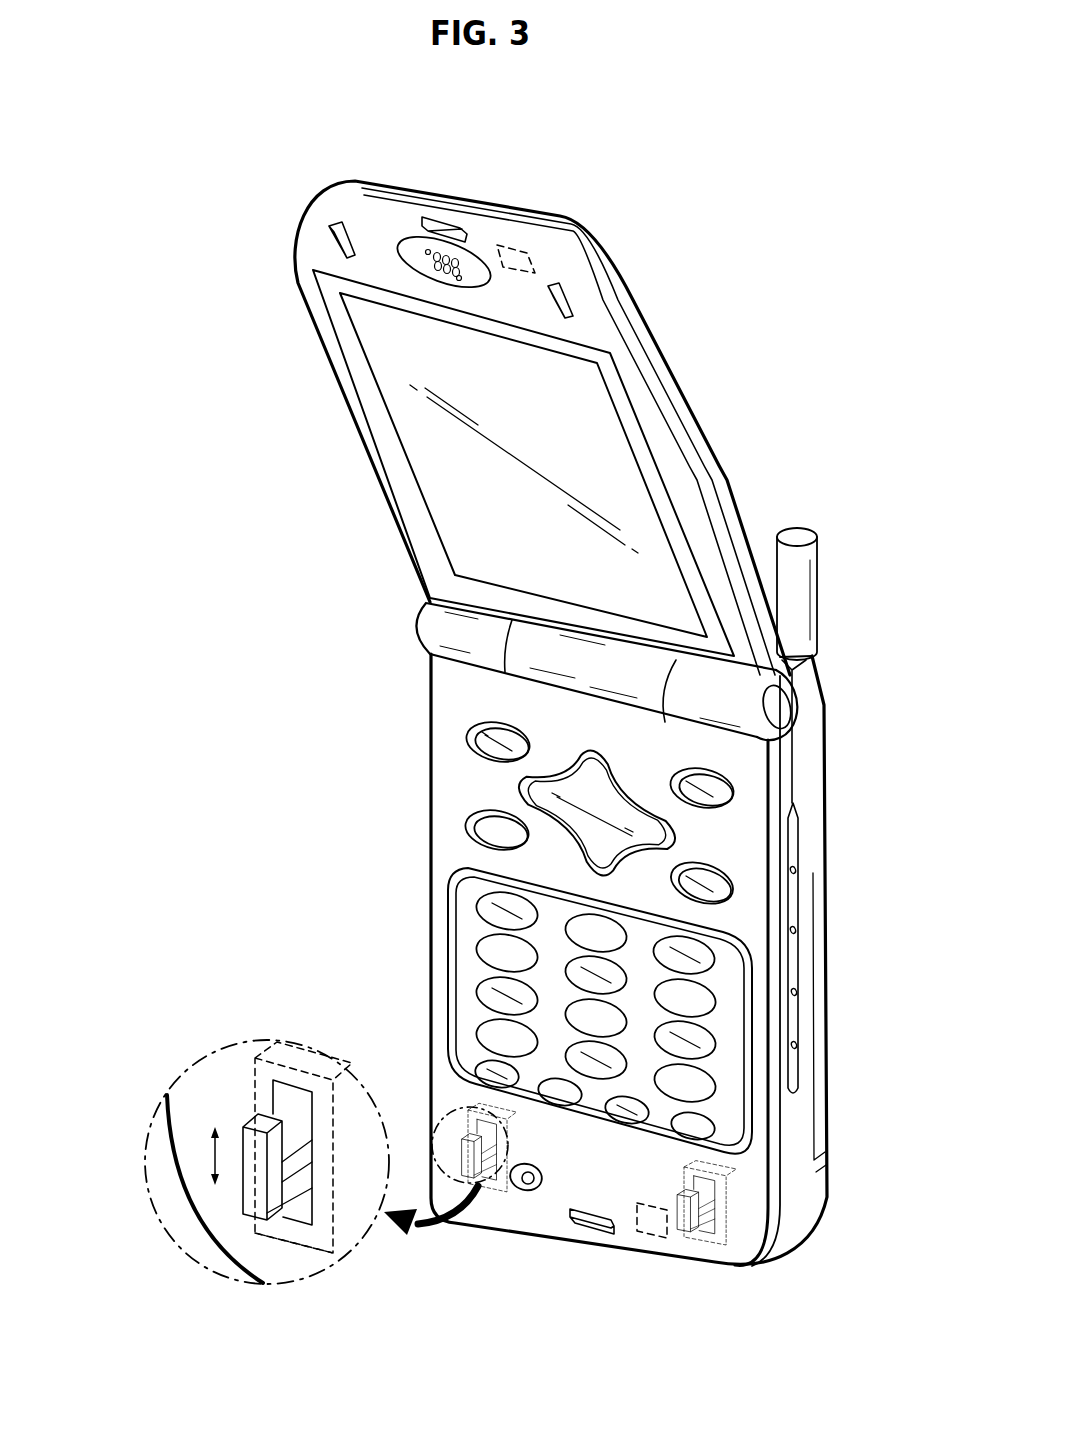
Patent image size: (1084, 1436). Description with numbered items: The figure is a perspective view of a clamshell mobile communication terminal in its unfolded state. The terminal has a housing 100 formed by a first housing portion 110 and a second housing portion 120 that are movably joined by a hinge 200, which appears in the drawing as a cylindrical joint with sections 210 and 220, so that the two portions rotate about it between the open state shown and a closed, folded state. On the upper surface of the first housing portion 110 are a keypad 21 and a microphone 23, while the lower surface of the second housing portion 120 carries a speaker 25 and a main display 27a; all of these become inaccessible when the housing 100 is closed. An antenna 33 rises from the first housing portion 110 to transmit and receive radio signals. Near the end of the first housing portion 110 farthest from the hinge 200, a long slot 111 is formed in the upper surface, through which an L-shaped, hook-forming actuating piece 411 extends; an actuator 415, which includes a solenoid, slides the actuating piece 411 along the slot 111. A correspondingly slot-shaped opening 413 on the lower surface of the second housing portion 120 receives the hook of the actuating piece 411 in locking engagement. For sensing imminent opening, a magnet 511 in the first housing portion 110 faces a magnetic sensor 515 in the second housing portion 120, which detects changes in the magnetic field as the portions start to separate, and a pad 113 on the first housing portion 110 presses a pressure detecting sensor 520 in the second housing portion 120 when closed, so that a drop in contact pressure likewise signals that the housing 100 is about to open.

The housing 100 is at (292, 590).
The first housing portion 110 is at (418, 704).
The second housing portion 120 is at (404, 564).
The hinge 200 is at (853, 427).
The hinge housing 210 is at (590, 663).
The hinge module 220 is at (718, 697).
The keypad 21 is at (466, 929).
The microphone 23 is at (530, 1183).
The speaker 25 is at (440, 262).
The main display 27a is at (430, 455).
The antenna 33 is at (793, 600).
The long slot 111 is at (285, 1080).
The pad 113 is at (593, 1218).
The actuating piece 411 is at (253, 1140).
The opening 413 is at (333, 238).
The actuator 415 is at (313, 1312).
The magnet 511 is at (650, 1227).
The magnetic sensor 515 is at (530, 263).
The pressure detecting sensor 520 is at (440, 228).